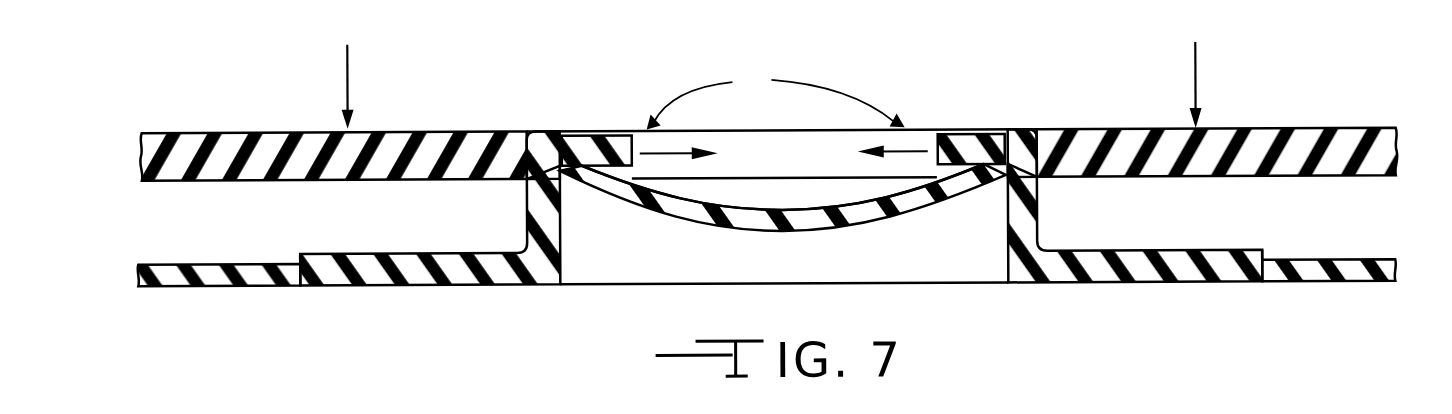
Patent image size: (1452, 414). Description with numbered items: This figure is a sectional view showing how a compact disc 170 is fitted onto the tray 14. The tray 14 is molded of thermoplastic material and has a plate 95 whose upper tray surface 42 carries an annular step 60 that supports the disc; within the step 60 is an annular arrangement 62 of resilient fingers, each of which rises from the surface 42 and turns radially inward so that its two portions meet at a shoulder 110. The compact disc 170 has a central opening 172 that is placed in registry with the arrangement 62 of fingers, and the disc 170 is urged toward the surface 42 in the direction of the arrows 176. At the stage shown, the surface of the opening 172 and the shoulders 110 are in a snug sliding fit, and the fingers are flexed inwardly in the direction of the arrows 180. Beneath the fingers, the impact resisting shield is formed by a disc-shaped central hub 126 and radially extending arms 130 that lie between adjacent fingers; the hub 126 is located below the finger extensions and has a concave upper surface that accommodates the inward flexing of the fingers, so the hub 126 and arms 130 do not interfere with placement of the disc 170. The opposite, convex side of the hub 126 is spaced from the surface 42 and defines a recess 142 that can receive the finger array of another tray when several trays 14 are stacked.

The tray 14 is at (131, 264).
The tray surface 42 is at (330, 252).
The annular step 60 is at (301, 260).
The arrangement of fingers 62 is at (775, 90).
The plate 95 is at (416, 269).
The shoulder 110 is at (566, 133).
The central body portion or hub 126 is at (833, 233).
The arms 130 is at (598, 185).
The recess 142 is at (696, 272).
The compact disc 170 is at (434, 126).
The central opening 172 is at (545, 130).
The arrows 176 is at (348, 64).
The arrows 180 is at (905, 152).